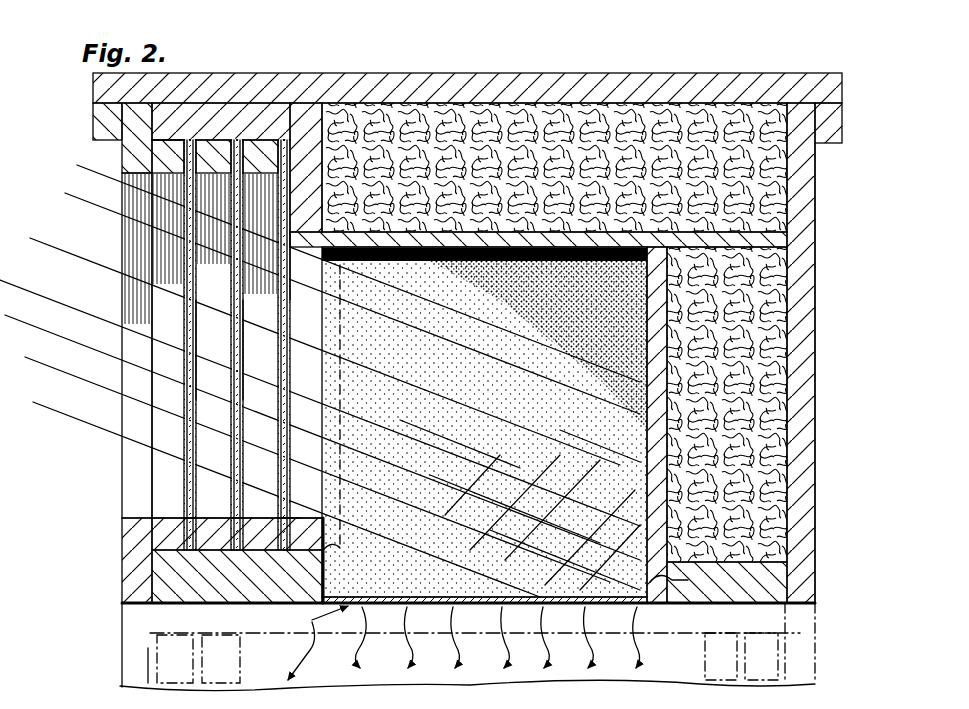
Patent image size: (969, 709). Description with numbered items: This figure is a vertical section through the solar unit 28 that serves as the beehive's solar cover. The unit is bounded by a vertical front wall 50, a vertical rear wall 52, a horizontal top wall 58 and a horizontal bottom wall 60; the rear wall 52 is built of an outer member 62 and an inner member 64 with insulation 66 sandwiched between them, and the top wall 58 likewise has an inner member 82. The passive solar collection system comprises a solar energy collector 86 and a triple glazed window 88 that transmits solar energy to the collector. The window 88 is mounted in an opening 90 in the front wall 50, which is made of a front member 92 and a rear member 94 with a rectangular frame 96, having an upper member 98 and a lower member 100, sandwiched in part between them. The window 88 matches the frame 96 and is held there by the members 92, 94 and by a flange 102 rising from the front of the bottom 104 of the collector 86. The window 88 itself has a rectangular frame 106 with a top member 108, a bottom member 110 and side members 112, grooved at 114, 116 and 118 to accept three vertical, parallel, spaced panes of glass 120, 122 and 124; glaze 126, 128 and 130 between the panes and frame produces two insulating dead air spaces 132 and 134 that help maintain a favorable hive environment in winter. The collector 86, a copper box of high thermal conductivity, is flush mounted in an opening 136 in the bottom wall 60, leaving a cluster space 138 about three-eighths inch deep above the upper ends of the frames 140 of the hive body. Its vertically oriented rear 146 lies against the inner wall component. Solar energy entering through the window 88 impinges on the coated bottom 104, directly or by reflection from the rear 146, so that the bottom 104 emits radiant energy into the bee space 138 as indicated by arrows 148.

The solar unit 28 is at (818, 548).
The front wall 50 is at (170, 585).
The rear wall 52 is at (816, 420).
The top wall 58 is at (527, 74).
The bottom wall 60 is at (170, 592).
The outer member 62 is at (816, 478).
The inner member 64 is at (650, 437).
The insulation 66 is at (760, 348).
The inner member 82 is at (800, 232).
The solar energy collector 86 is at (318, 622).
The triple glazed window 88 is at (182, 466).
The opening 90 is at (205, 140).
The front member 92 is at (122, 532).
The rear member 94 is at (322, 112).
The rectangular frame 96 is at (256, 112).
The upper member 98 is at (224, 106).
The lower member 100 is at (200, 600).
The flange 102 is at (340, 548).
The bottom 104 is at (633, 612).
The rectangular frame 106 is at (104, 100).
The top member 108 is at (286, 104).
The bottom member 110 is at (258, 560).
The side member 112 is at (158, 233).
The groove 114 is at (185, 516).
The groove 116 is at (236, 518).
The groove 118 is at (288, 514).
The pane of glass 120 is at (185, 383).
The pane of glass 122 is at (233, 403).
The pane of glass 124 is at (280, 428).
The glaze 126 is at (188, 518).
The glaze 128 is at (281, 516).
The glaze 130 is at (300, 515).
The dead air space 132 is at (200, 313).
The dead air space 134 is at (253, 360).
The opening 136 is at (698, 594).
The cluster space 138 is at (175, 646).
The frames 140 is at (240, 656).
The rear 146 is at (650, 488).
The arrows 148 is at (537, 620).